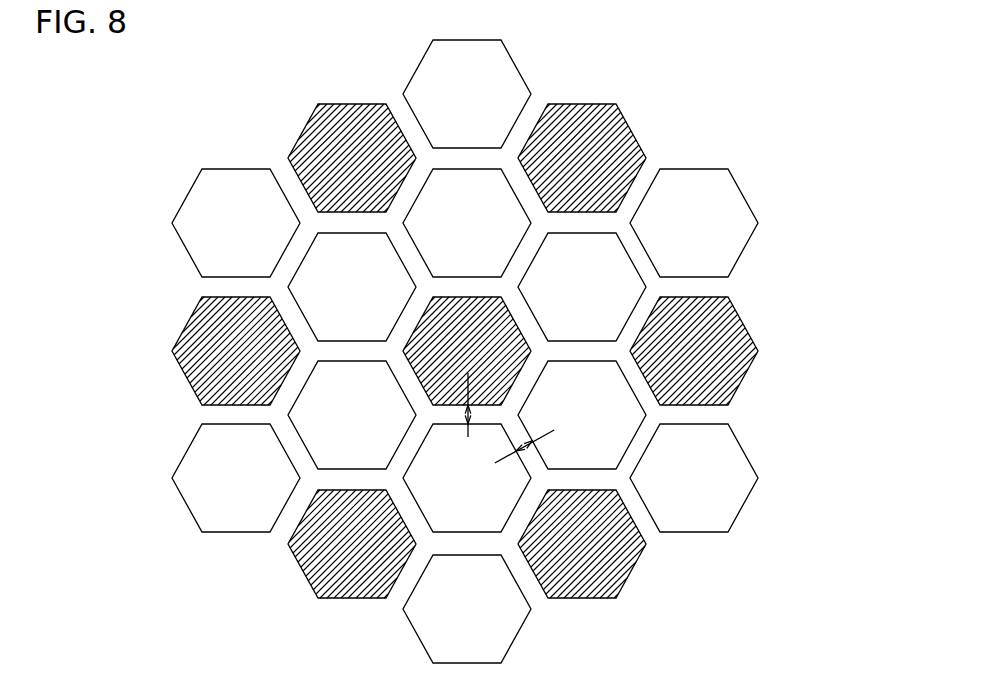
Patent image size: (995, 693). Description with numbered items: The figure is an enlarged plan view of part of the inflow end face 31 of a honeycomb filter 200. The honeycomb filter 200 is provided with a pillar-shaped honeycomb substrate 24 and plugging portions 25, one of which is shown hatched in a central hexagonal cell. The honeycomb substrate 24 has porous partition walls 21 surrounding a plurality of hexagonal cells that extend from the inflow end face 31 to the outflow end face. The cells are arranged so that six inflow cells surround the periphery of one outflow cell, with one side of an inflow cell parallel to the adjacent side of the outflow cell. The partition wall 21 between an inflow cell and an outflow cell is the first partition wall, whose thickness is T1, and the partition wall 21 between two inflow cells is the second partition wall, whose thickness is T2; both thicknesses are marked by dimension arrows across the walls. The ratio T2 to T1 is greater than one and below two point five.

The honeycomb filter 200 is at (798, 57).
The honeycomb substrate 24 is at (721, 166).
The partition wall 21 is at (505, 285).
The plugging portion 25 is at (447, 323).
The inflow end face 31 is at (242, 138).
The thickness of the first partition wall T1 is at (467, 413).
The thickness of the second partition wall T2 is at (528, 453).